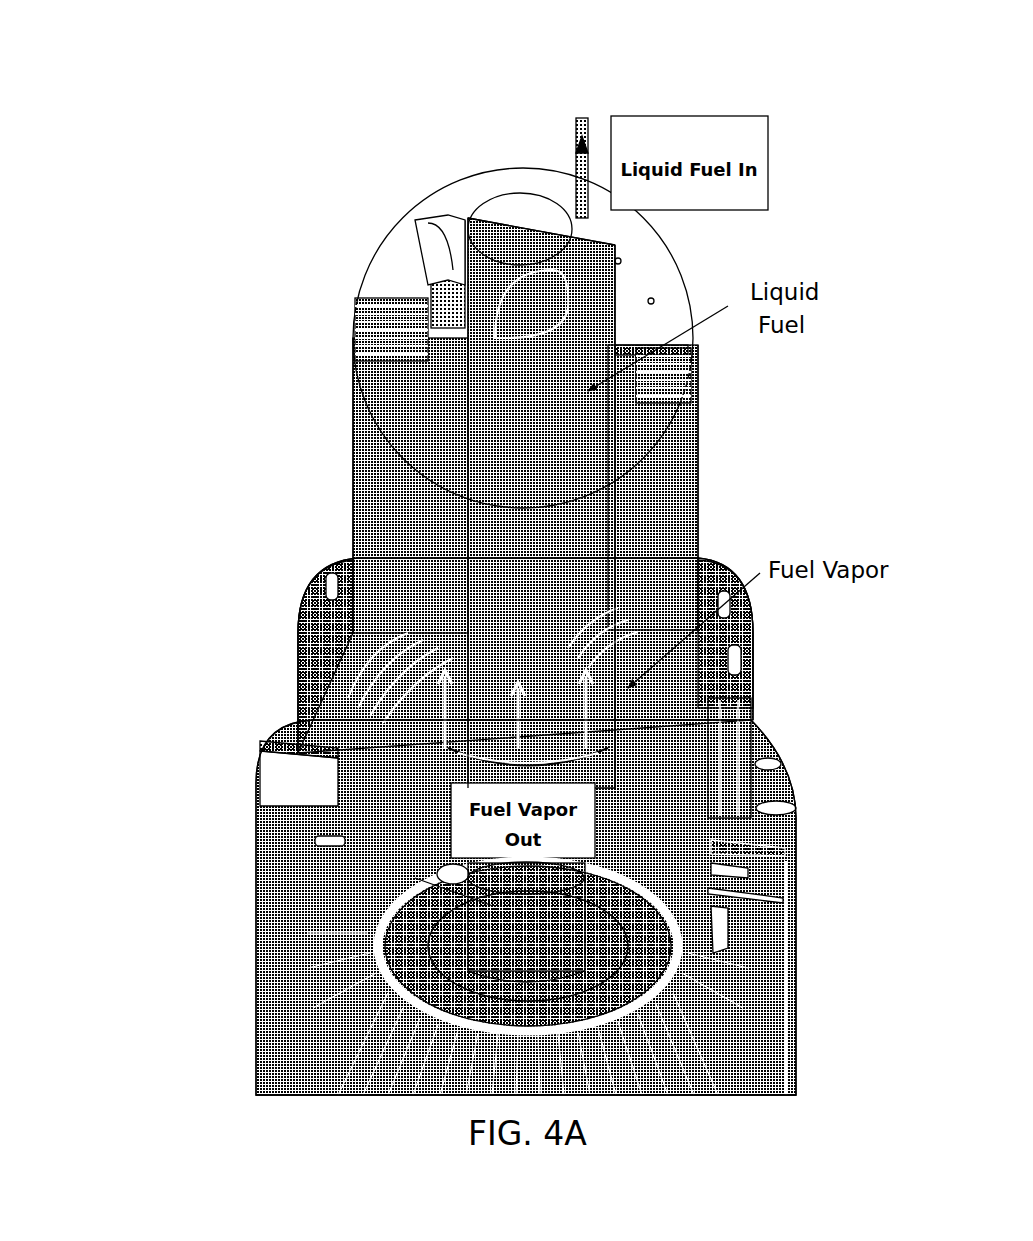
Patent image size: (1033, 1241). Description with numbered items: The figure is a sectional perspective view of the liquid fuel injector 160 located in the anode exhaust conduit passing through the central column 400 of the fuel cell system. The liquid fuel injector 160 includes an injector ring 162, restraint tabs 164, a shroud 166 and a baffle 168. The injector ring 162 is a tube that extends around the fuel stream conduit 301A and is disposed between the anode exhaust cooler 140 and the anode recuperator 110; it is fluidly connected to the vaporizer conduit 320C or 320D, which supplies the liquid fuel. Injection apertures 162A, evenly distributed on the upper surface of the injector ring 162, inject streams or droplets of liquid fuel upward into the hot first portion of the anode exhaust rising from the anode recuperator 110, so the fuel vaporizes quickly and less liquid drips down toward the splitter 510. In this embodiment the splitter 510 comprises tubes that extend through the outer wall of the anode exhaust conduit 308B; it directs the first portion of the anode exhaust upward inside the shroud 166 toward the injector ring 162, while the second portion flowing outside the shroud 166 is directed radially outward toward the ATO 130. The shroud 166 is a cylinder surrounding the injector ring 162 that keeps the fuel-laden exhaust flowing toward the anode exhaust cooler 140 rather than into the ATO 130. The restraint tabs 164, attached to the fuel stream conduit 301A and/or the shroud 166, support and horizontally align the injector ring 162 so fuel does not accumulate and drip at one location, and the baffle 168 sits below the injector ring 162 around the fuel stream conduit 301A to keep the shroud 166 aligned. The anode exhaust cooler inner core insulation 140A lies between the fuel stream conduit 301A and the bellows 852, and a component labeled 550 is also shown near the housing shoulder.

The central column 400 is at (765, 100).
The anode recuperator 110 is at (655, 1035).
The ATO 130 is at (743, 930).
The anode exhaust cooler 140 is at (663, 490).
The anode exhaust cooler inner core insulation 140A is at (420, 462).
The liquid fuel injector 160 is at (137, 555).
The injector ring 162 is at (435, 727).
The injection apertures 162A is at (533, 742).
The restraint tabs 164 is at (402, 708).
The shroud 166 is at (370, 847).
The baffle 168 is at (415, 942).
The fuel stream conduit 301A is at (520, 578).
The anode exhaust conduit 308B is at (700, 887).
The vaporizer conduit 320C is at (726, 407).
The vaporizer conduit 320D is at (578, 458).
The splitter 510 is at (723, 863).
The shoulder 550 is at (767, 747).
The bellows 852 is at (695, 745).